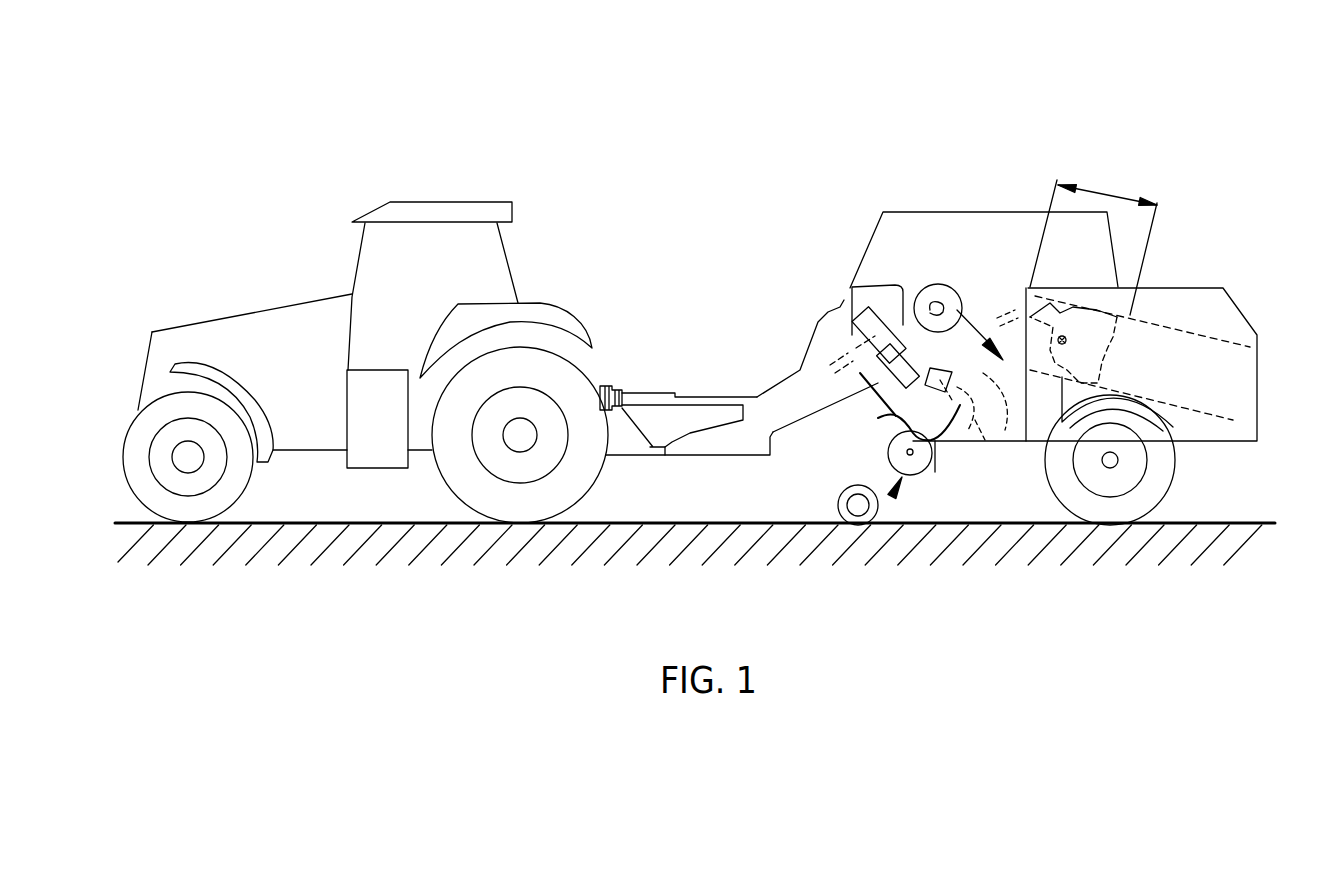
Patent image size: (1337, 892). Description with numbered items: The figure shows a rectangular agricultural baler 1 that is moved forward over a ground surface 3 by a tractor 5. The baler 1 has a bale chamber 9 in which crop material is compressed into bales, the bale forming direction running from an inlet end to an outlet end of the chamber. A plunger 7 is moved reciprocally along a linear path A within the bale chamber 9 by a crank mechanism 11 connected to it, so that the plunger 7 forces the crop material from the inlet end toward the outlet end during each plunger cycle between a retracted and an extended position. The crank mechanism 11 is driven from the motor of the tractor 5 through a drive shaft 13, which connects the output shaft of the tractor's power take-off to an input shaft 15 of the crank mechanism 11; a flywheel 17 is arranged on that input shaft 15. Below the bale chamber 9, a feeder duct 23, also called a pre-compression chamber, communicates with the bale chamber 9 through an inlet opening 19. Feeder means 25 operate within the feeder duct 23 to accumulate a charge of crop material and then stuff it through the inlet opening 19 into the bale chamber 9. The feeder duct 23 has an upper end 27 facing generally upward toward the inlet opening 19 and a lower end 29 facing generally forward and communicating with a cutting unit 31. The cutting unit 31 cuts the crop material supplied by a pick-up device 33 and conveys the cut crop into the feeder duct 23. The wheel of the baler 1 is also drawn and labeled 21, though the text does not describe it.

The rectangular agricultural baler 1 is at (1047, 145).
The ground surface 3 is at (1197, 523).
The tractor 5 is at (268, 320).
The plunger 7 is at (1093, 360).
The bale chamber 9 is at (1217, 377).
The crank mechanism 11 is at (964, 222).
The drive shaft 13 is at (693, 392).
The input shaft 15 is at (873, 279).
The flywheel 17 is at (853, 323).
The inlet opening 19 is at (1053, 320).
The baler wheel 21 is at (1163, 423).
The feeder duct 23 is at (962, 455).
The feeder means 25 is at (878, 418).
The upper end 27 is at (953, 305).
The lower end 29 is at (941, 458).
The cutting unit 31 is at (890, 500).
The pick-up device 33 is at (870, 480).
The linear path A is at (1093, 234).